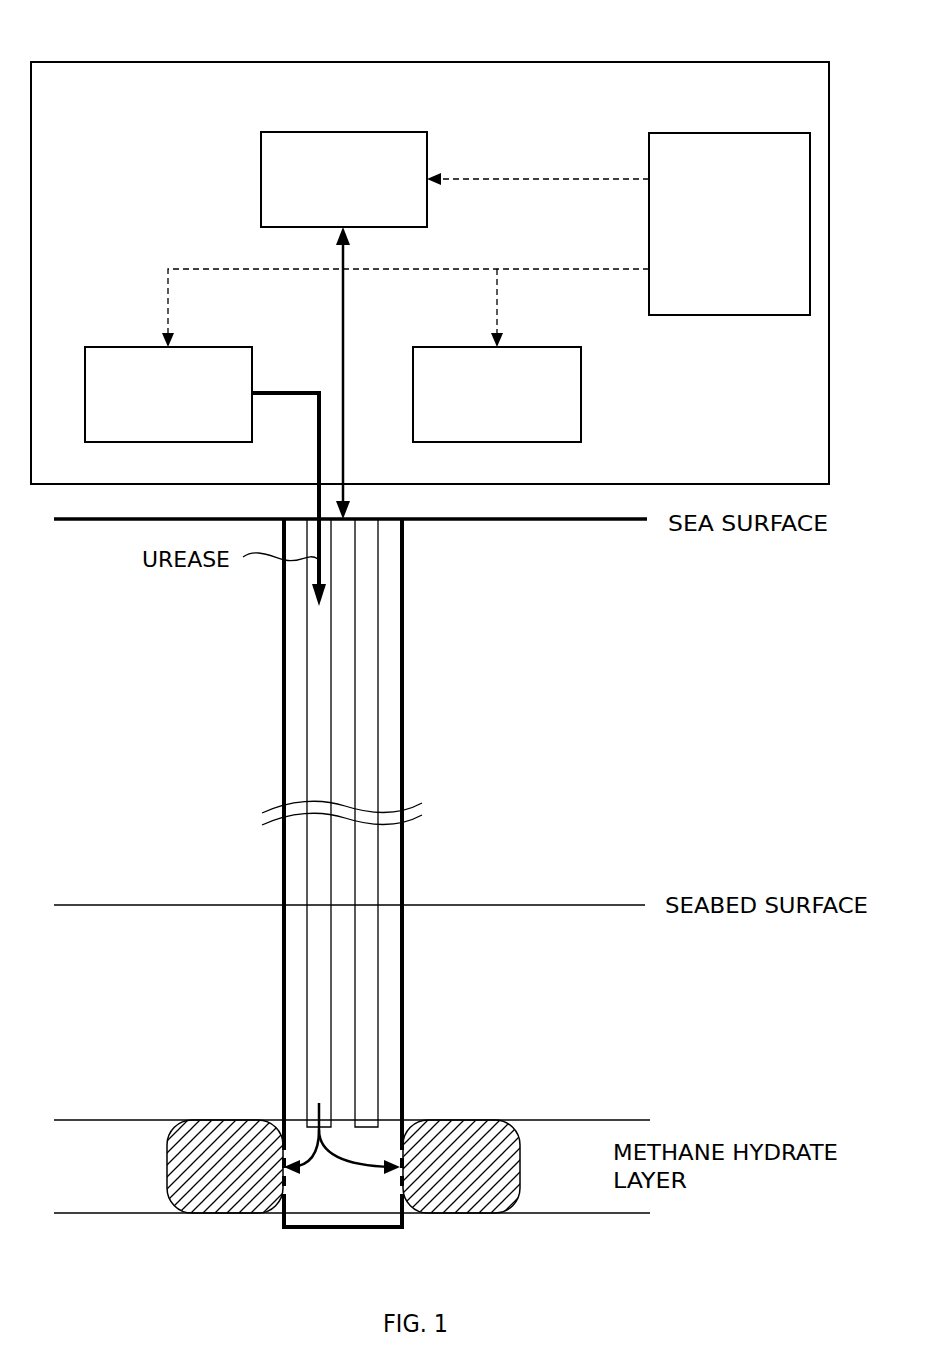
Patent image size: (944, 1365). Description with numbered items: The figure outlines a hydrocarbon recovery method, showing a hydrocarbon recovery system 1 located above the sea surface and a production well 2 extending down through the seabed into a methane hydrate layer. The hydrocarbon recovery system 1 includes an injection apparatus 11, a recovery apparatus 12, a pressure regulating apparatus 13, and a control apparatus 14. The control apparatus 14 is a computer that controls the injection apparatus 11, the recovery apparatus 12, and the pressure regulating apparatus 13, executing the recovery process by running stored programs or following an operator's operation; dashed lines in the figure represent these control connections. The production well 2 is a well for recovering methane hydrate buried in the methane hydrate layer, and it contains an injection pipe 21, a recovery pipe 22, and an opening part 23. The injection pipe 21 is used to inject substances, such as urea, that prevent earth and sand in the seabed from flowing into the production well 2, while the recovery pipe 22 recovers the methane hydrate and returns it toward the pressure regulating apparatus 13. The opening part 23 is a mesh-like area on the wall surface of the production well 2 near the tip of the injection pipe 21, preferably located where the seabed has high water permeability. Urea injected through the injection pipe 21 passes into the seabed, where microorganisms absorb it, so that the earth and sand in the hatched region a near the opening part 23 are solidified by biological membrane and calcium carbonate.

The hydrocarbon recovery system 1 is at (790, 62).
The production well 2 is at (403, 636).
The injection apparatus 11 is at (213, 347).
The recovery apparatus 12 is at (532, 347).
The pressure regulating apparatus 13 is at (390, 132).
The control apparatus 14 is at (729, 133).
The injection pipe 21 is at (307, 730).
The recovery pipe 22 is at (378, 731).
The opening part 23 is at (395, 1178).
The region near the opening part a is at (227, 1119).